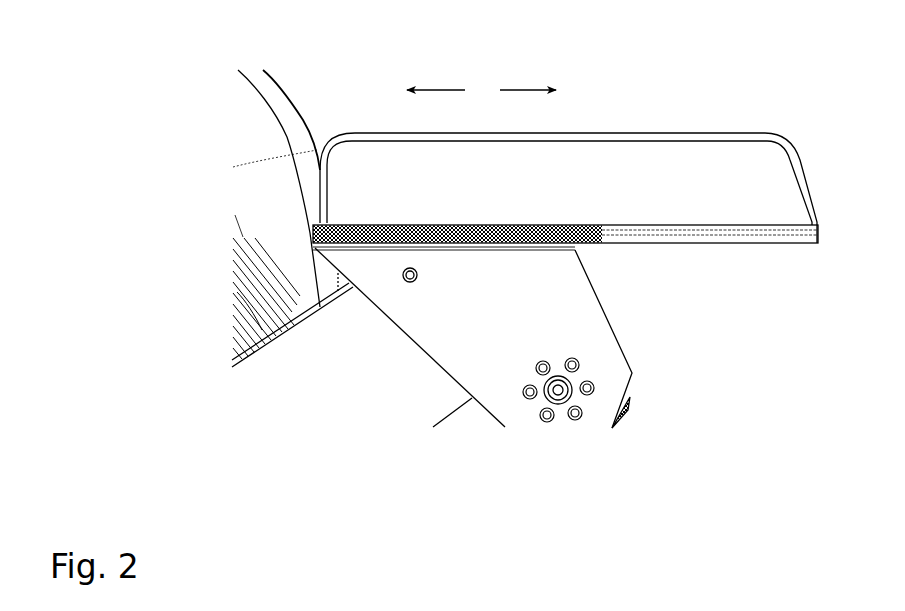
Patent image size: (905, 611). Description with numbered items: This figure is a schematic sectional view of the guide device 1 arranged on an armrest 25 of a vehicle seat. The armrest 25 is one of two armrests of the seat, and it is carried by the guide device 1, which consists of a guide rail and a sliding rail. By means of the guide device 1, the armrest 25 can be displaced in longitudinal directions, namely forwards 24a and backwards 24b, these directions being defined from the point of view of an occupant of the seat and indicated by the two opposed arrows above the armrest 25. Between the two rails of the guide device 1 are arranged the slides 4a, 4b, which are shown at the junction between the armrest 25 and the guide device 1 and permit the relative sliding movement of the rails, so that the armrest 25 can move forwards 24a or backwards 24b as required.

The guide device 1 is at (601, 259).
The armrest 25 is at (637, 116).
The slide 4a is at (353, 241).
The slide 4b is at (557, 243).
The forwards direction 24a is at (518, 89).
The backwards direction 24b is at (442, 89).